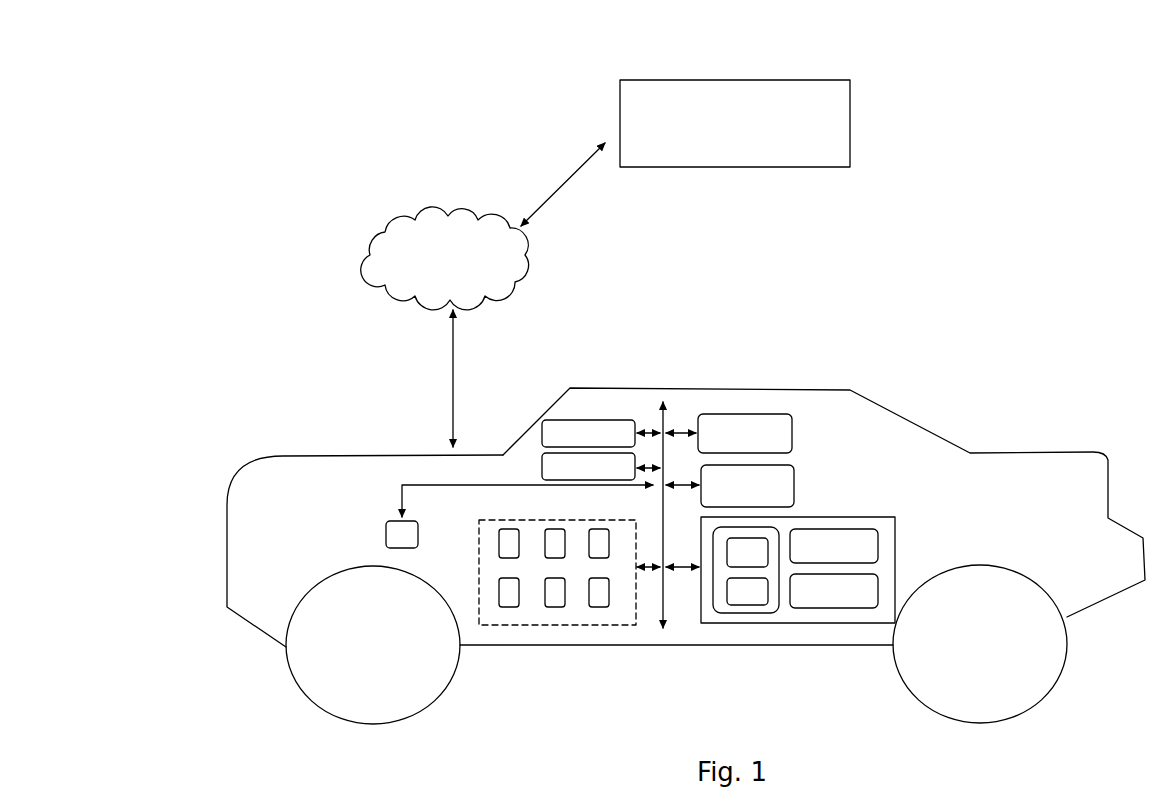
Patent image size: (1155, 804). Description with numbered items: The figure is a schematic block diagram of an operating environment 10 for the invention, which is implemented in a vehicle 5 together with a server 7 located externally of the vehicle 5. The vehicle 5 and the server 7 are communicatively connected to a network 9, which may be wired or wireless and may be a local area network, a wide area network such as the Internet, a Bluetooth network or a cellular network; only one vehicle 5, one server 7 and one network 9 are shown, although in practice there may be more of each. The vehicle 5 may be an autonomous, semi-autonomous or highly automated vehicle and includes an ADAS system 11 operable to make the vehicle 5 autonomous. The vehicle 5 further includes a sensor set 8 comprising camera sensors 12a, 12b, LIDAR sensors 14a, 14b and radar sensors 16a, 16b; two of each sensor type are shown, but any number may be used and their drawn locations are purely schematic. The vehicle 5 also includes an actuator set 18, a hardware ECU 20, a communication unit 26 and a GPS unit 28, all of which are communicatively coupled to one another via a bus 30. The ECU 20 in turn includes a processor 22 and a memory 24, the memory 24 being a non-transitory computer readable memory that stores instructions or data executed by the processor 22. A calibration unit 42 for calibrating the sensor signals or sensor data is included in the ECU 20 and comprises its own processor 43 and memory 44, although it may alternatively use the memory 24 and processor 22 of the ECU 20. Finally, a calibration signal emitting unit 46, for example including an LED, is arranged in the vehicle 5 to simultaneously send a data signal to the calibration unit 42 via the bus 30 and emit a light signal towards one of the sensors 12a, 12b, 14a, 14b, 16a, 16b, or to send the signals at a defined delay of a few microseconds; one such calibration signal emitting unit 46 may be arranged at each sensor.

The vehicle 5 is at (1093, 452).
The server 7 is at (849, 80).
The sensor set 8 is at (634, 627).
The network 9 is at (478, 222).
The operating environment 10 is at (212, 159).
The ADAS system 11 is at (795, 487).
The camera sensor 12a is at (509, 529).
The camera sensor 12b is at (509, 607).
The LIDAR sensor 14a is at (555, 529).
The LIDAR sensor 14b is at (555, 607).
The radar sensor 16a is at (600, 529).
The radar sensor 16b is at (600, 607).
The actuator set 18 is at (541, 466).
The hardware ECU 20 is at (896, 545).
The processor 22 is at (855, 609).
The memory 24 is at (866, 530).
The communication unit 26 is at (793, 440).
The GPS unit 28 is at (566, 420).
The bus 30 is at (656, 428).
The calibration unit 42 is at (728, 614).
The processor 43 is at (748, 606).
The memory 44 is at (770, 542).
The calibration signal emitting unit 46 is at (385, 521).